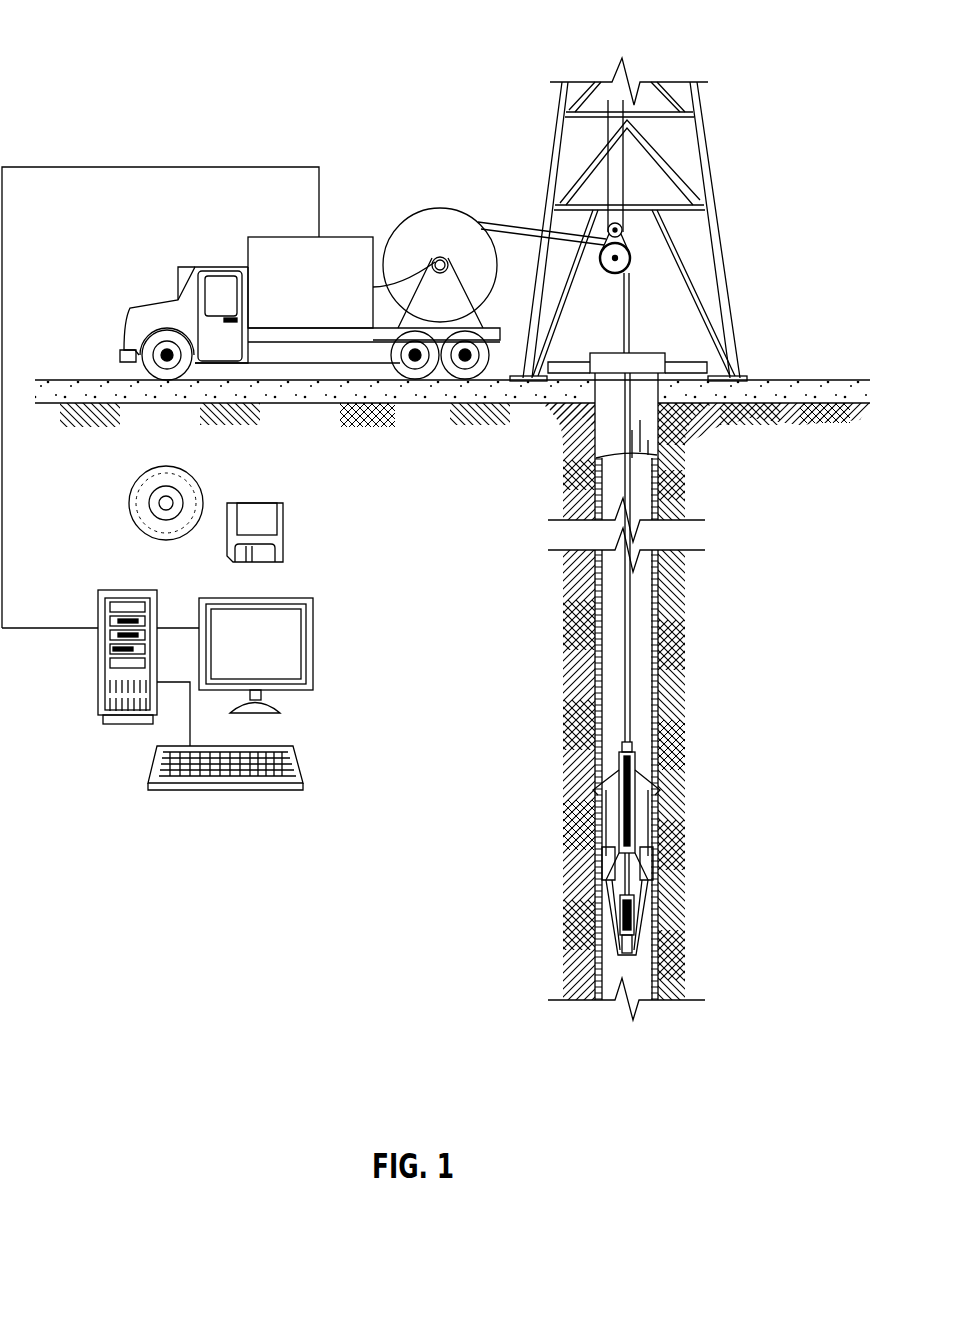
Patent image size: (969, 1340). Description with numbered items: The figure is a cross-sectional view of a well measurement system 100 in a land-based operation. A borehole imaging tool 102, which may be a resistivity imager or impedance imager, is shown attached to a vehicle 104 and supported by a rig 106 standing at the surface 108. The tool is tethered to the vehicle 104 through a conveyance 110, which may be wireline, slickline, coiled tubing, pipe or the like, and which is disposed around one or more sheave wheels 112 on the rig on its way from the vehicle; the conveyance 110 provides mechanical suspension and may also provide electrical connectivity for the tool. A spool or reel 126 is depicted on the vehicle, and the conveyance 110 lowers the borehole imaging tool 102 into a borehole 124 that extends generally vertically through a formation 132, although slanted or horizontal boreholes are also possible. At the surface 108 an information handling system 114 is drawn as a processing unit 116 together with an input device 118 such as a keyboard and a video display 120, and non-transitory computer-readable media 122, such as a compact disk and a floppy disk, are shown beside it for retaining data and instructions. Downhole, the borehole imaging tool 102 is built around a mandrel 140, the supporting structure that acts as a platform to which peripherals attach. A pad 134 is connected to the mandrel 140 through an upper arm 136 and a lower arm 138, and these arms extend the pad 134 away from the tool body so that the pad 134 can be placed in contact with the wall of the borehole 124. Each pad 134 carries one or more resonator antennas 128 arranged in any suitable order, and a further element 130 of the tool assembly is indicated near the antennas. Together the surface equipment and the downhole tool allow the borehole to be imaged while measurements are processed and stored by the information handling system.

The well measurement system 100 is at (138, 28).
The borehole imaging tool 102 is at (583, 801).
The vehicle 104 is at (265, 237).
The rig 106 is at (707, 130).
The surface 108 is at (790, 380).
The conveyance 110 is at (624, 617).
The sheave wheel 112 is at (612, 273).
The information handling system 114 is at (138, 797).
The processing unit 116 is at (113, 590).
The input device 118 is at (300, 768).
The video display 120 is at (313, 640).
The non-transitory computer-readable media 122 is at (198, 483).
The borehole 124 is at (637, 508).
The cable reel 126 is at (440, 208).
The resonator antenna 128 is at (650, 870).
The tool body 130 is at (645, 890).
The formation 132 is at (821, 619).
The pad 134 is at (668, 800).
The upper arm 136 is at (638, 828).
The lower arm 138 is at (612, 905).
The mandrel 140 is at (625, 875).